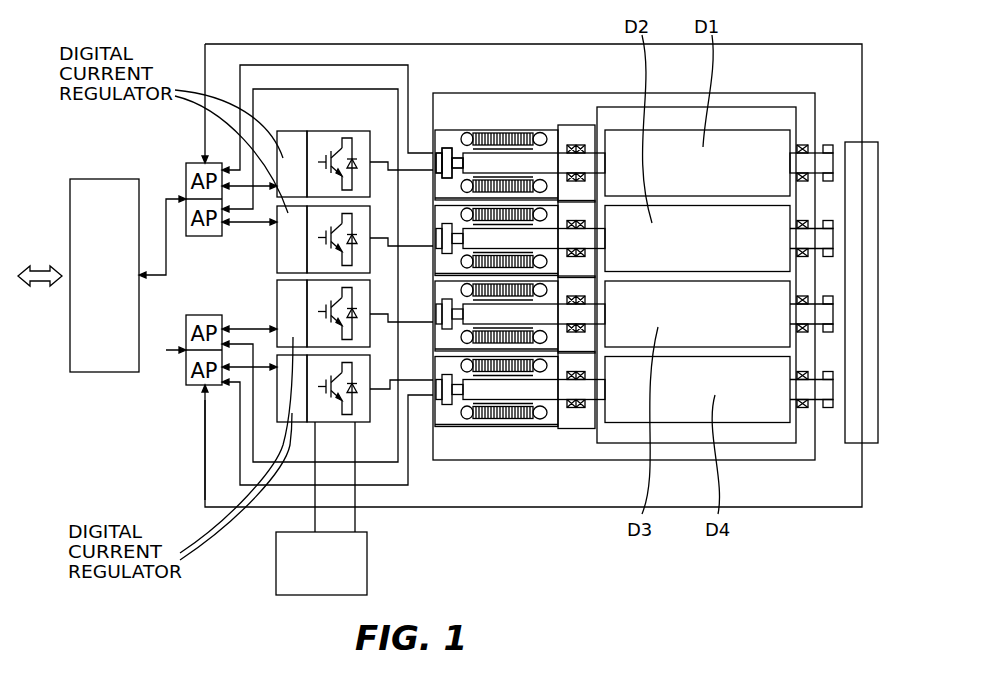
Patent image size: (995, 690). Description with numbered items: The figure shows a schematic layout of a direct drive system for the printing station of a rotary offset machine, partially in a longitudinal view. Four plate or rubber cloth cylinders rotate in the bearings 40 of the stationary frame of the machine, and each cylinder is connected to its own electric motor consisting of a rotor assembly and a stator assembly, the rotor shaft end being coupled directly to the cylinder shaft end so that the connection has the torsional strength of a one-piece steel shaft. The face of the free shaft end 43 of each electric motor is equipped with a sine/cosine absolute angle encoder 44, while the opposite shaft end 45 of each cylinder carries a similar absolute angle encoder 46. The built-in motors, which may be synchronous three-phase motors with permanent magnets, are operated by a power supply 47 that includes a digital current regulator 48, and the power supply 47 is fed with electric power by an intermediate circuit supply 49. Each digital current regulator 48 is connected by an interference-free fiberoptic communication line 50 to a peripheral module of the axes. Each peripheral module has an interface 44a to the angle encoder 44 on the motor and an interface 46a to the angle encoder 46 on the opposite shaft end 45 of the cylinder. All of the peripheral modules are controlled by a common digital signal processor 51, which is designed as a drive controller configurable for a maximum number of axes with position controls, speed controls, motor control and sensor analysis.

The bearings 40 is at (800, 145).
The free shaft end 43 is at (461, 156).
The absolute angle encoder 44 is at (448, 150).
The interface 44a is at (348, 87).
The opposite shaft end 45 is at (803, 163).
The absolute angle encoder 46 is at (860, 162).
The interface 46a is at (205, 461).
The power supply 47 is at (333, 140).
The digital current regulator 48 is at (290, 140).
The intermediate circuit supply 49 is at (288, 575).
The fiberoptic communication line 50 is at (250, 328).
The digital signal processor 51 is at (72, 208).